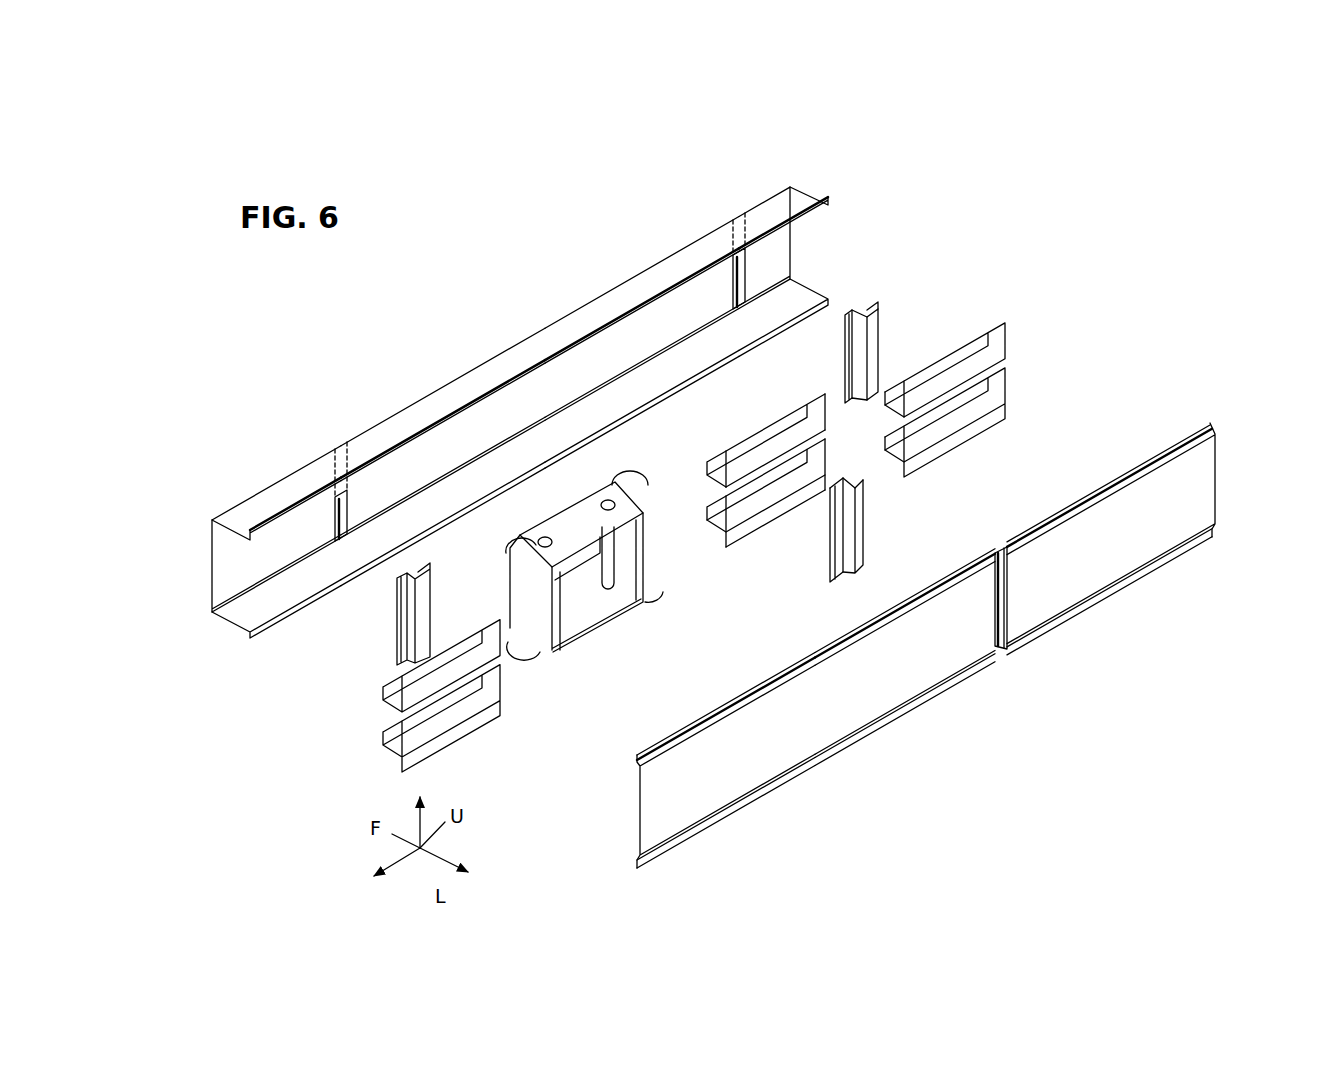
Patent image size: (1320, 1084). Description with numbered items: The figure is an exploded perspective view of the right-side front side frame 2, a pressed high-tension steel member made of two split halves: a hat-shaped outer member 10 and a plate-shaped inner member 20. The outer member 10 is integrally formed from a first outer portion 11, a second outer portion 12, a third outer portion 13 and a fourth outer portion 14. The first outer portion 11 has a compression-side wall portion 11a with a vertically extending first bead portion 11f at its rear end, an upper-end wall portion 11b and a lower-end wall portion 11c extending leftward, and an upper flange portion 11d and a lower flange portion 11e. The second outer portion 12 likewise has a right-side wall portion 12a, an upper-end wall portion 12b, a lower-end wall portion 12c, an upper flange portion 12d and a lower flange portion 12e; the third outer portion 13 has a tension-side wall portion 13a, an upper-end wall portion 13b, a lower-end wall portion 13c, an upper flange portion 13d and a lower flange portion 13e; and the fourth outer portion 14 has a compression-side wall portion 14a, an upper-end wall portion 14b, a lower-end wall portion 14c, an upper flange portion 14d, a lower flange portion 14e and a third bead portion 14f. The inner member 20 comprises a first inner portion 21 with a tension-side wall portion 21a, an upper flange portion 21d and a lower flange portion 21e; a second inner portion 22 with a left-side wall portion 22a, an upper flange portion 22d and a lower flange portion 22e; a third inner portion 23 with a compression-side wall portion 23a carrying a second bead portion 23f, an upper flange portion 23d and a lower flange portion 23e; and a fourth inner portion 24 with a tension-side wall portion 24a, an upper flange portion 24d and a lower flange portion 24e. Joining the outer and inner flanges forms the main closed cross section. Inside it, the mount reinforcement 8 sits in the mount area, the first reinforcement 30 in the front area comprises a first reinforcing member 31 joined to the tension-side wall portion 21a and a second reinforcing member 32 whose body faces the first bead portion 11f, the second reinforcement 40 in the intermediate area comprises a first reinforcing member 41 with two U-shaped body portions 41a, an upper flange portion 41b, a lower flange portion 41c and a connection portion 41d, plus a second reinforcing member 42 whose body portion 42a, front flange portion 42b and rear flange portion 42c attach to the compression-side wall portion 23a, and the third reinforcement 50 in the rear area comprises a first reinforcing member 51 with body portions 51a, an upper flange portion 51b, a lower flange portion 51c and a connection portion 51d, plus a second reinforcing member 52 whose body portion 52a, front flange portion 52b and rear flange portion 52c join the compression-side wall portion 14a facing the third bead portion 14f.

The front side frame 2 is at (860, 140).
The mount reinforcement 8 is at (641, 615).
The outer member 10 is at (628, 230).
The first outer portion 11 is at (257, 492).
The compression-side wall portion 11a is at (212, 558).
The upper-end wall portion 11b is at (240, 517).
The lower-end wall portion 11c is at (238, 617).
The upper flange portion 11d is at (302, 508).
The lower flange portion 11e is at (307, 605).
The first bead portion 11f is at (347, 443).
The second outer portion 12 is at (443, 385).
The right-side wall portion 12a is at (488, 437).
The upper-end wall portion 12b is at (415, 417).
The lower-end wall portion 12c is at (440, 513).
The upper flange portion 12d is at (483, 402).
The lower flange portion 12e is at (478, 508).
The third outer portion 13 is at (577, 306).
The tension-side wall portion 13a is at (622, 355).
The upper-end wall portion 13b is at (530, 347).
The lower-end wall portion 13c is at (623, 405).
The upper flange portion 13d is at (611, 327).
The lower flange portion 13e is at (680, 393).
The fourth outer portion 14 is at (672, 250).
The compression-side wall portion 14a is at (790, 250).
The upper-end wall portion 14b is at (725, 233).
The lower-end wall portion 14c is at (790, 303).
The upper flange portion 14d is at (693, 278).
The lower flange portion 14e is at (740, 357).
The third bead portion 14f is at (737, 215).
The inner member 20 is at (785, 812).
The first inner portion 21 is at (677, 848).
The tension-side wall portion 21a is at (748, 775).
The upper flange portion 21d is at (692, 723).
The lower flange portion 21e is at (712, 822).
The second inner portion 22 is at (853, 748).
The left-side wall portion 22a is at (872, 713).
The upper flange portion 22d is at (850, 635).
The lower flange portion 22e is at (905, 708).
The third inner portion 23 is at (1020, 655).
The compression-side wall portion 23a is at (1003, 650).
The upper flange portion 23d is at (983, 557).
The lower flange portion 23e is at (982, 640).
The second bead portion 23f is at (1000, 610).
The fourth inner portion 24 is at (1207, 543).
The tension-side wall portion 24a is at (1177, 535).
The upper flange portion 24d is at (1147, 463).
The lower flange portion 24e is at (1157, 570).
The first reinforcement 30 is at (372, 668).
The first reinforcing member 31 is at (478, 733).
The second reinforcing member 32 is at (394, 617).
The second reinforcement 40 is at (767, 547).
The first reinforcing member 41 is at (772, 420).
The body portions 41a is at (743, 490).
The upper flange portion 41b is at (737, 452).
The lower flange portion 41c is at (712, 546).
The connection portion 41d is at (717, 499).
The second reinforcing member 42 is at (872, 511).
The body portion 42a is at (843, 487).
The front flange portion 42b is at (833, 532).
The rear flange portion 42c is at (862, 530).
The third reinforcement 50 is at (943, 290).
The first reinforcing member 51 is at (1000, 344).
The body portions 51a is at (887, 443).
The upper flange portion 51b is at (972, 357).
The lower flange portion 51c is at (990, 425).
The connection portion 51d is at (1000, 383).
The second reinforcing member 52 is at (882, 308).
The body portion 52a is at (873, 349).
The front flange portion 52b is at (847, 378).
The rear flange portion 52c is at (872, 304).